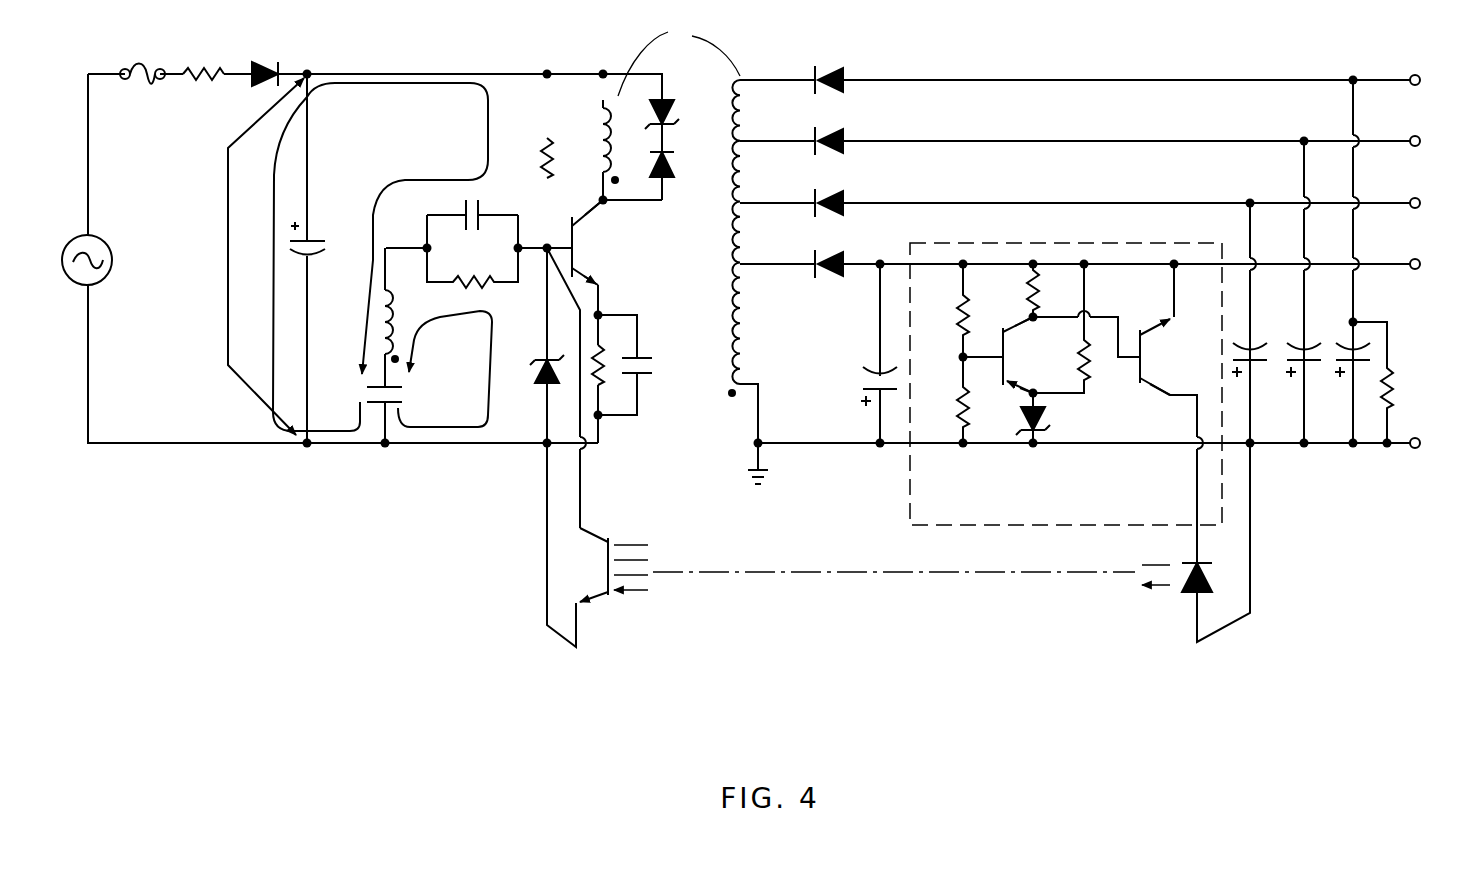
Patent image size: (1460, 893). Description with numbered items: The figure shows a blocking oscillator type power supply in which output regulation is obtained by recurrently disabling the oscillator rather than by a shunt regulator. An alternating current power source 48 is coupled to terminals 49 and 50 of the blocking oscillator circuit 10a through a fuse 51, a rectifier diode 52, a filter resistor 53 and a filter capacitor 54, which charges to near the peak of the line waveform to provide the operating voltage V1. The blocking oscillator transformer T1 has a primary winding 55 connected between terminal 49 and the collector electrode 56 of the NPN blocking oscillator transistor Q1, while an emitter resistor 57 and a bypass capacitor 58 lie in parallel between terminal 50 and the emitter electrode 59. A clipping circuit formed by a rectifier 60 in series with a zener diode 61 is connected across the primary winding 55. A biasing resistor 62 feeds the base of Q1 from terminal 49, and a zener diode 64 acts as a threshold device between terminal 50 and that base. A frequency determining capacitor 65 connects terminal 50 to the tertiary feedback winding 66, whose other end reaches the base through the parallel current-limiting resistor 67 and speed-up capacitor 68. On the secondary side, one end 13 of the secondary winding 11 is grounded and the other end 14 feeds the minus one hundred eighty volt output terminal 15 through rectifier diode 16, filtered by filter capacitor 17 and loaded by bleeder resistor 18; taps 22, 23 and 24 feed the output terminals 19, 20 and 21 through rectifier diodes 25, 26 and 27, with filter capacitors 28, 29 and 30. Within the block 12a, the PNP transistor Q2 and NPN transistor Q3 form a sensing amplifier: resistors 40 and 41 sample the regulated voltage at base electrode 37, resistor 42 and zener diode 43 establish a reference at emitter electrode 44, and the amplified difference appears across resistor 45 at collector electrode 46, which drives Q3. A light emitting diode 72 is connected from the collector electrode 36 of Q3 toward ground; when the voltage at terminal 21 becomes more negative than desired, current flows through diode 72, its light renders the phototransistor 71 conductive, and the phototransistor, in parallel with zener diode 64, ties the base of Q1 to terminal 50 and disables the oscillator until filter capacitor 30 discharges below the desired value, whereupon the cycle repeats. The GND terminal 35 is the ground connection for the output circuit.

The blocking oscillator circuit 10a is at (513, 51).
The secondary winding 11 is at (733, 218).
The sensing amplifier 12a is at (975, 242).
The one end of secondary winding 13 is at (762, 393).
The other end of secondary winding 14 is at (758, 72).
The -180 volt output terminal 15 is at (1408, 74).
The rectifier diode 16 is at (845, 72).
The filter capacitor 17 is at (1342, 342).
The bleeder resistor 18 is at (1393, 385).
The -90 volt output terminal 19 is at (1408, 137).
The -15 volt output terminal 20 is at (1408, 199).
The -12 volt output terminal 21 is at (1408, 261).
The tap 22 is at (750, 135).
The tap 23 is at (750, 197).
The tap 24 is at (750, 258).
The rectifier diode 25 is at (845, 133).
The rectifier diode 26 is at (845, 195).
The rectifier diode 27 is at (845, 257).
The filter capacitor 28 is at (1295, 342).
The filter capacitor 29 is at (1258, 366).
The filter capacitor 30 is at (872, 370).
The ground terminal 35 is at (1402, 438).
The collector electrode of Q3 36 is at (1165, 388).
The base electrode of Q2 37 is at (1000, 352).
The voltage divider resistor 40 is at (955, 300).
The voltage divider resistor 41 is at (953, 412).
The resistor 42 is at (1090, 355).
The zener diode 43 is at (1050, 413).
The emitter electrode of Q2 44 is at (1020, 383).
The resistor 45 is at (1030, 290).
The collector electrode of Q2 46 is at (1022, 328).
The alternating current power source 48 is at (108, 240).
The terminal 49 is at (345, 70).
The terminal 50 is at (312, 448).
The fuse 51 is at (140, 58).
The rectifier diode 52 is at (270, 60).
The filter resistor 53 is at (203, 62).
The filter capacitor 54 is at (315, 235).
The primary winding 55 is at (598, 140).
The collector electrode of Q1 56 is at (600, 222).
The emitter resistor 57 is at (608, 380).
The bypass capacitor 58 is at (643, 352).
The emitter electrode of Q1 59 is at (595, 272).
The rectifier 60 is at (676, 165).
The zener diode 61 is at (676, 110).
The biasing resistor 62 is at (553, 155).
The zener diode 64 is at (540, 390).
The frequency determining capacitor 65 is at (403, 396).
The tertiary feedback winding 66 is at (400, 328).
The current-limiting resistor 67 is at (472, 280).
The speed-up capacitor 68 is at (485, 210).
The phototransistor 71 is at (612, 538).
The light emitting diode 72 is at (1188, 560).
The NPN blocking oscillator transistor Q1 is at (588, 242).
The PNP transistor Q2 is at (999, 355).
The NPN transistor Q3 is at (1171, 413).
The blocking oscillator transformer T1 is at (679, 57).
The operating voltage V1 is at (233, 260).